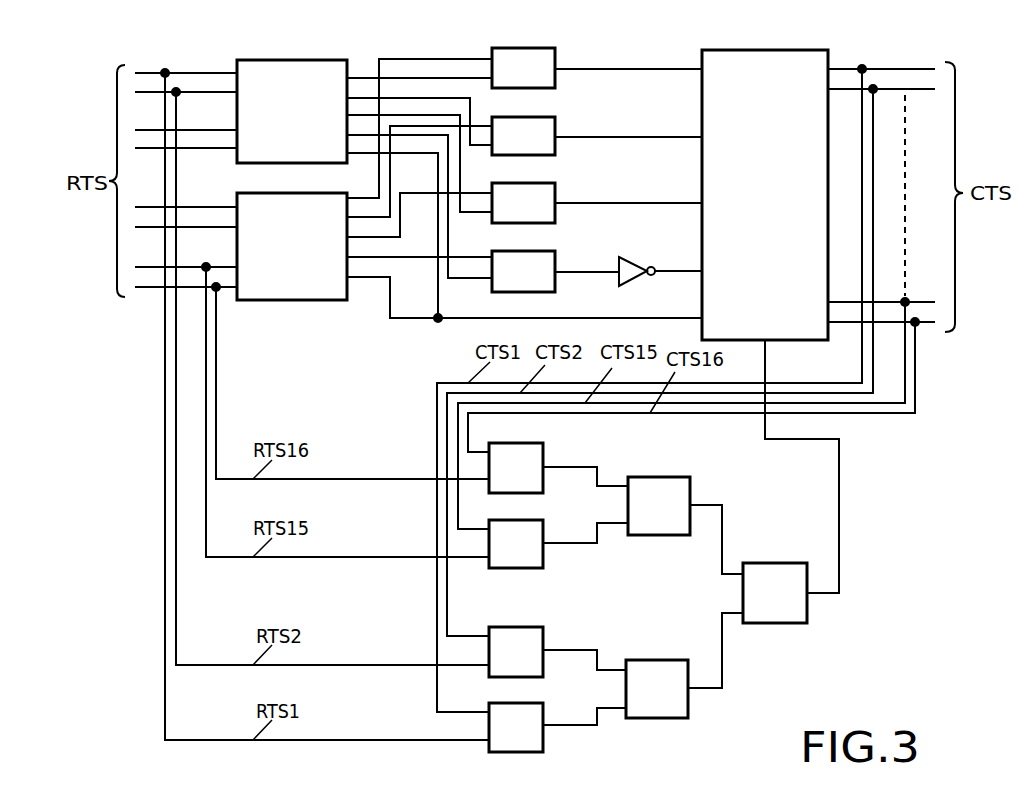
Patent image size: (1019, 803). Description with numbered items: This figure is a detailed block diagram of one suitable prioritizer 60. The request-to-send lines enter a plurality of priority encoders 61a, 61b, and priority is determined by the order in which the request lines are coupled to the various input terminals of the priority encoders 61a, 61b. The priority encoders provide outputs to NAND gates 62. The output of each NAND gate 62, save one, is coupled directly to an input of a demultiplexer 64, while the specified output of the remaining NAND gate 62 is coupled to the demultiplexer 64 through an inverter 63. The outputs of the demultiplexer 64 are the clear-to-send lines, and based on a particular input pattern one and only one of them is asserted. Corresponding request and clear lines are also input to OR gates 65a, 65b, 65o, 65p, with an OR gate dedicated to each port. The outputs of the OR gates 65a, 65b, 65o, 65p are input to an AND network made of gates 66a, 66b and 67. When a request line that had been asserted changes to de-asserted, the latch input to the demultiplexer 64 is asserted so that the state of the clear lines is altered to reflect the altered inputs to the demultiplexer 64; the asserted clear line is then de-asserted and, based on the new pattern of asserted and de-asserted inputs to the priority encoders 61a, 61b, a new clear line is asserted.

The prioritizer 60 is at (712, 586).
The priority encoder 61a is at (352, 70).
The priority encoder 61b is at (287, 298).
The NAND gate 62 is at (575, 238).
The inverter 63 is at (635, 253).
The demultiplexer 64 is at (823, 62).
The OR gate 65a is at (544, 453).
The OR gate 65b is at (544, 525).
The OR gate 65o is at (543, 634).
The OR gate 65p is at (543, 710).
The AND gate 66a is at (690, 477).
The AND gate 66b is at (700, 645).
The AND gate 67 is at (773, 623).